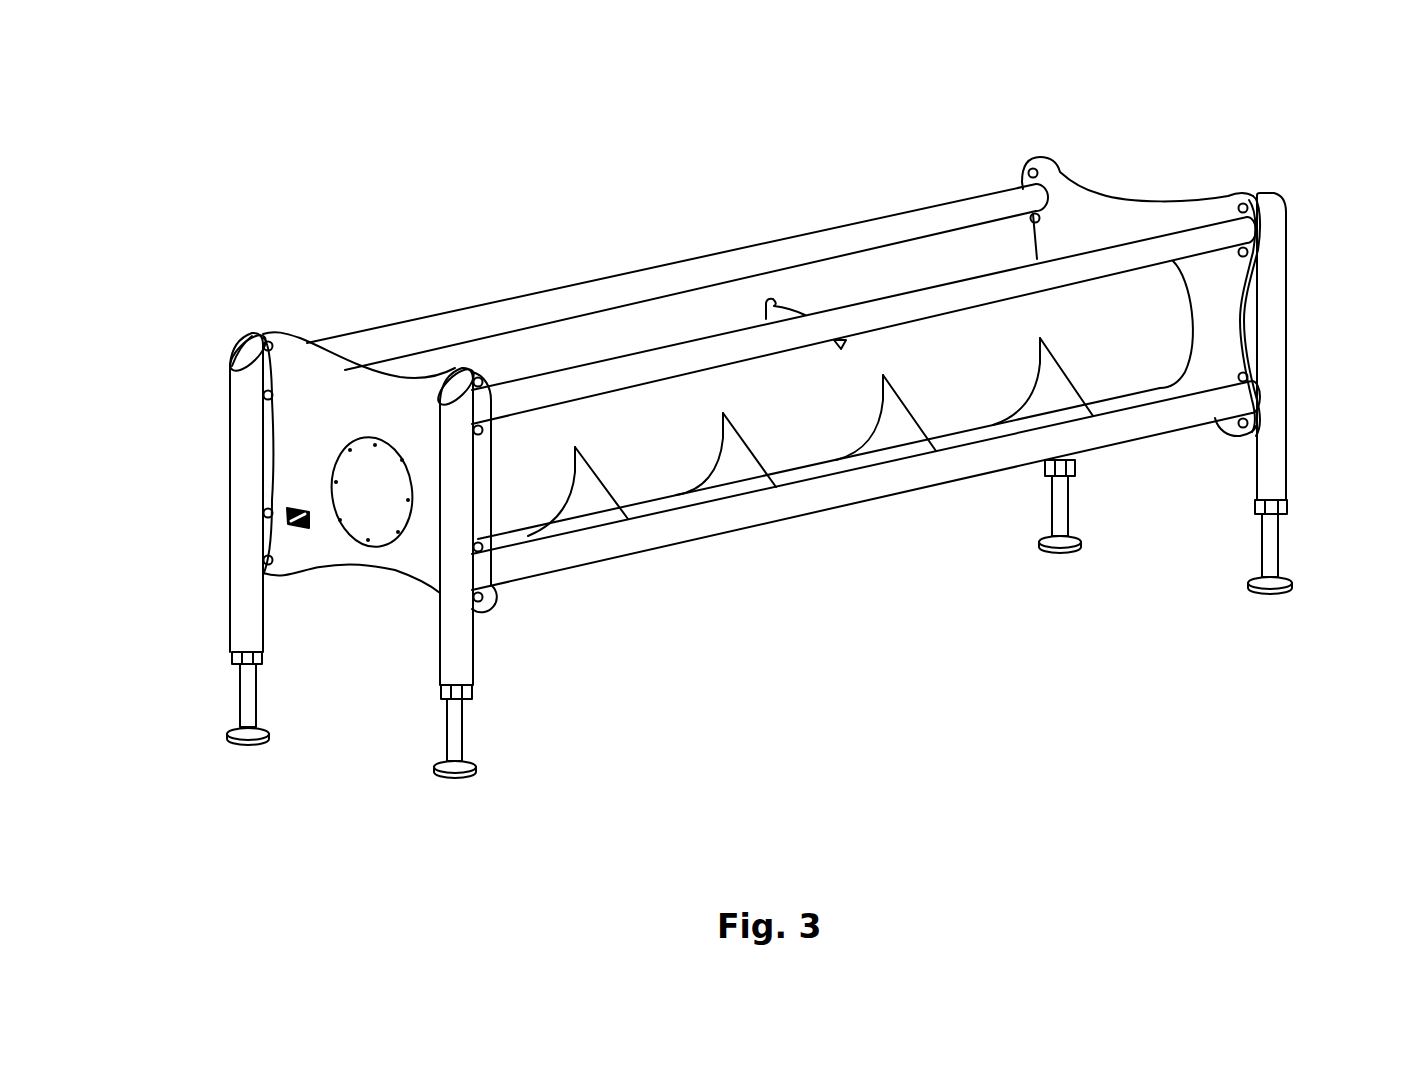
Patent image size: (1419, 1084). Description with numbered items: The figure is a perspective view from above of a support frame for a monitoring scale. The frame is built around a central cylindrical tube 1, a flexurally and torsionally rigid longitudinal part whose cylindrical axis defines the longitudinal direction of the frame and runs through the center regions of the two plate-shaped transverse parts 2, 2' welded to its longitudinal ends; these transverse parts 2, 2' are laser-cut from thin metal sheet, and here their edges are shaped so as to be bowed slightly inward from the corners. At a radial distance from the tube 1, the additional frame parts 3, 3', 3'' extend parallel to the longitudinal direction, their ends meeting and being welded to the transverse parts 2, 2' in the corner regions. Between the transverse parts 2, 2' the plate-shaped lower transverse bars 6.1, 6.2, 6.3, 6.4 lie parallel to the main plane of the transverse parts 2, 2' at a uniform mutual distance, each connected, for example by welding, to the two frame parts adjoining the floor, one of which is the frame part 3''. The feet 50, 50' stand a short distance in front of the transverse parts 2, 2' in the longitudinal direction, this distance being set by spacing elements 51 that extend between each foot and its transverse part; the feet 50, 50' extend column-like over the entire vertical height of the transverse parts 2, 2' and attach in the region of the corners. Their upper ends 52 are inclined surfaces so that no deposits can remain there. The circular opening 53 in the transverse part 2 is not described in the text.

The central cylindrical tube 1 is at (1115, 355).
The transverse part 2 is at (380, 404).
The transverse part 2' is at (1141, 253).
The additional frame part 3 is at (677, 229).
The additional frame part 3' is at (864, 250).
The additional frame part 3'' is at (866, 578).
The lower transverse bar 6.1 is at (590, 507).
The lower transverse bar 6.2 is at (733, 478).
The lower transverse bar 6.3 is at (900, 443).
The lower transverse bar 6.4 is at (1045, 408).
The foot 50 is at (748, 469).
The foot 50' is at (424, 637).
The spacing element 51 is at (265, 345).
The upper end of foot 52 is at (245, 355).
The circular opening 53 is at (376, 513).